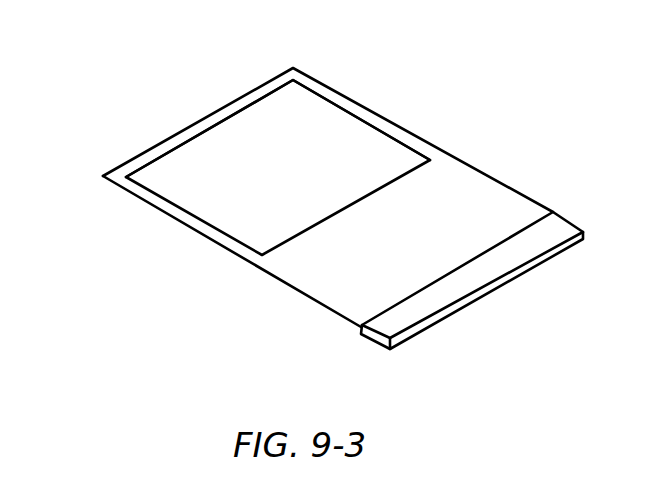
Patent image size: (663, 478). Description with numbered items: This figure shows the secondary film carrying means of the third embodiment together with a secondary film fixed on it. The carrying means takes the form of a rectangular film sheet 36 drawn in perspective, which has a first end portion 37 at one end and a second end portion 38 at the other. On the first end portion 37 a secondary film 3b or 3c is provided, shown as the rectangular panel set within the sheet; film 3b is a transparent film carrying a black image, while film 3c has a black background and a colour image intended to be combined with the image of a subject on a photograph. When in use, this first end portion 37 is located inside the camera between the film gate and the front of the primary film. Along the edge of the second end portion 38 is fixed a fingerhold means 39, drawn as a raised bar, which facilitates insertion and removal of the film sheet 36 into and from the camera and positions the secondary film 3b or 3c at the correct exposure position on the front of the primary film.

The film sheet 36 is at (133, 137).
The first end portion 37 is at (132, 197).
The secondary film 3b is at (279, 138).
The secondary film 3c is at (313, 112).
The second end portion 38 is at (505, 212).
The fingerhold means 39 is at (480, 277).